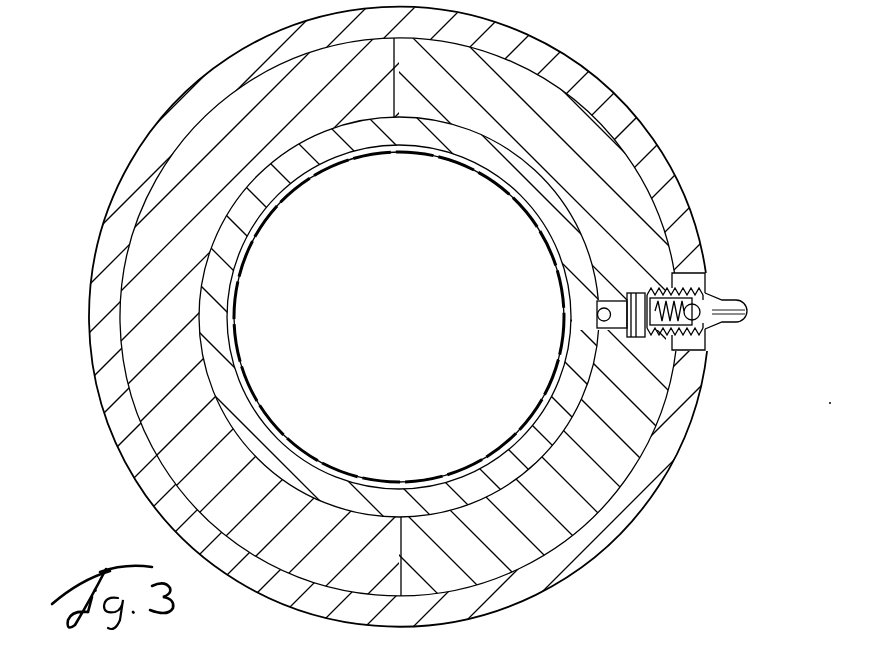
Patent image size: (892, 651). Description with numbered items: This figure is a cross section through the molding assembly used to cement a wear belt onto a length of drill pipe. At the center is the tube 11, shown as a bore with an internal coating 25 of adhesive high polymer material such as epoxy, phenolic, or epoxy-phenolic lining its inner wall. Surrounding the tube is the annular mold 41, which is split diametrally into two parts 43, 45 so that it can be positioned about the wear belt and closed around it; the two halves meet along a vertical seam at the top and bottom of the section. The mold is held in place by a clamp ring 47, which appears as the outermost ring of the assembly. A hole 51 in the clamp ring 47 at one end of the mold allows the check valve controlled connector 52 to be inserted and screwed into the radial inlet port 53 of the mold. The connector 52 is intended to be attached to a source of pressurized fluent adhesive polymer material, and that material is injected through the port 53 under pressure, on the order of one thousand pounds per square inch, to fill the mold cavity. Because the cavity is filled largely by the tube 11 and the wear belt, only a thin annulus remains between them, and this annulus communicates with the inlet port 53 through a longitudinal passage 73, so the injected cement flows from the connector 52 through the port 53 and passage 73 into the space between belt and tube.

The tube 11 is at (227, 312).
The internal coating 25 is at (266, 412).
The annular mold 41 is at (240, 89).
The mold part 43 is at (331, 100).
The mold part 45 is at (460, 102).
The clamp ring 47 is at (583, 80).
The hole 51 is at (706, 278).
The check valve controlled connector 52 is at (746, 301).
The radial inlet port 53 is at (636, 338).
The longitudinal passage 73 is at (600, 315).